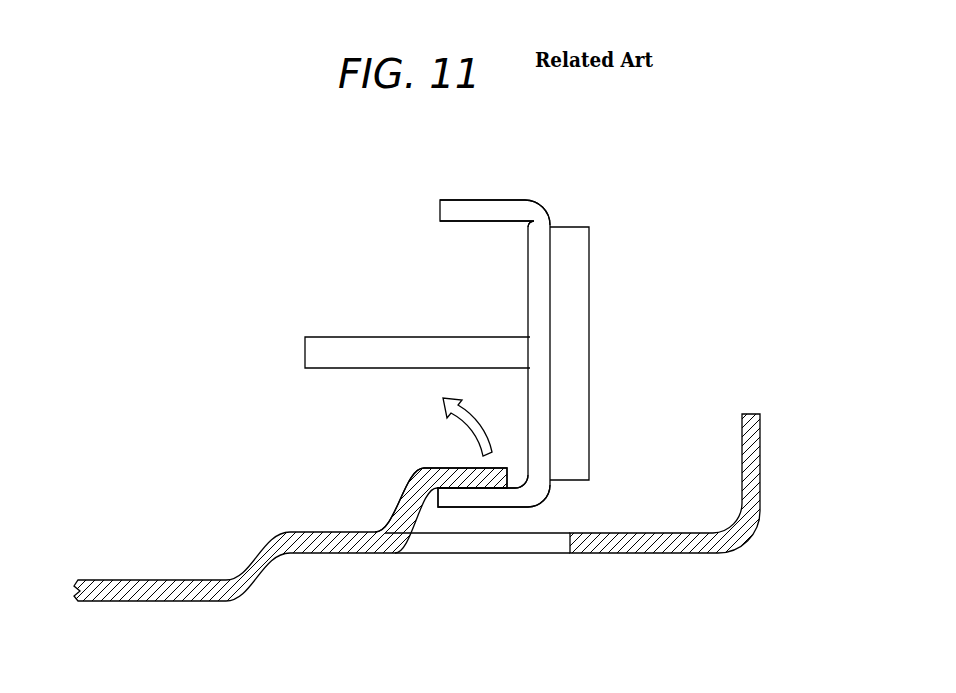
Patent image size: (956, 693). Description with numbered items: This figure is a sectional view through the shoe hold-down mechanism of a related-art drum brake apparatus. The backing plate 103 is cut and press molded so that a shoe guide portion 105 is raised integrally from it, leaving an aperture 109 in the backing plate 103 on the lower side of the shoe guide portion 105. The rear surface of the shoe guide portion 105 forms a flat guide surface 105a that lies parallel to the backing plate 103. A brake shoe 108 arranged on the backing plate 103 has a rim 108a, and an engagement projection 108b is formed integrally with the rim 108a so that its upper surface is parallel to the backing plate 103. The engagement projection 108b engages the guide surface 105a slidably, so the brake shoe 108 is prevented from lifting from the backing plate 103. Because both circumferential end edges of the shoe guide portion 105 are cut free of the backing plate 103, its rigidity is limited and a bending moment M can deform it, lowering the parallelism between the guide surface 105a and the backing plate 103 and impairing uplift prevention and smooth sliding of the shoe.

The backing plate 103 is at (148, 578).
The shoe guide portion 105 is at (445, 466).
The guide surface 105a is at (433, 490).
The brake shoe 108 is at (497, 195).
The rim 108a is at (530, 258).
The engagement projection 108b is at (482, 498).
The aperture 109 is at (543, 545).
The bending moment M is at (476, 420).